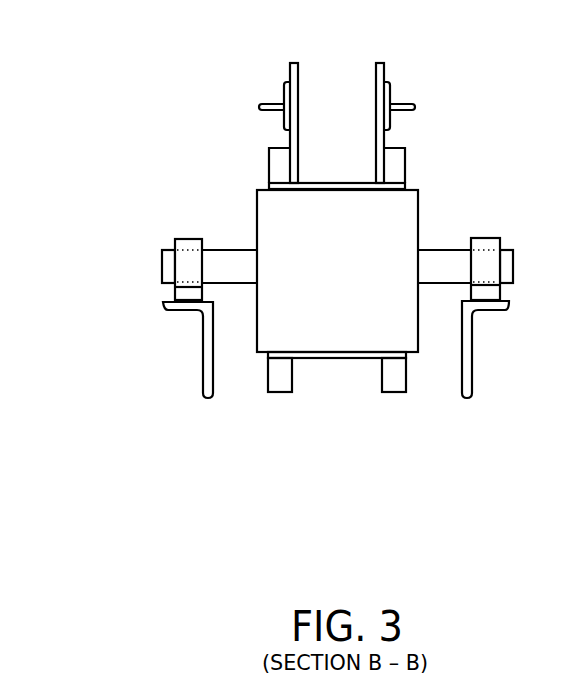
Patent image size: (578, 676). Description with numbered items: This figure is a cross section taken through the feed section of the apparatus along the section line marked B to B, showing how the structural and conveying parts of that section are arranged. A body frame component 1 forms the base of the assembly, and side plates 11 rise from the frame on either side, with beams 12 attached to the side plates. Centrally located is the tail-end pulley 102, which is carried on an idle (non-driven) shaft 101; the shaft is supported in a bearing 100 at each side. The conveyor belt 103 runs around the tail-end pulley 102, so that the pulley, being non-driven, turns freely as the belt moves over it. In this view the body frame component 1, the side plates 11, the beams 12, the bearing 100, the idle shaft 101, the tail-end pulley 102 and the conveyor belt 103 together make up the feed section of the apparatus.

The body frame component 1 is at (205, 347).
The side plates 11 is at (290, 63).
The beams 12 is at (273, 103).
The bearing 100 is at (187, 240).
The idle (non-driven) shaft 101 is at (238, 250).
The tail-end pulley 102 is at (420, 217).
The conveyor belt 103 is at (403, 148).